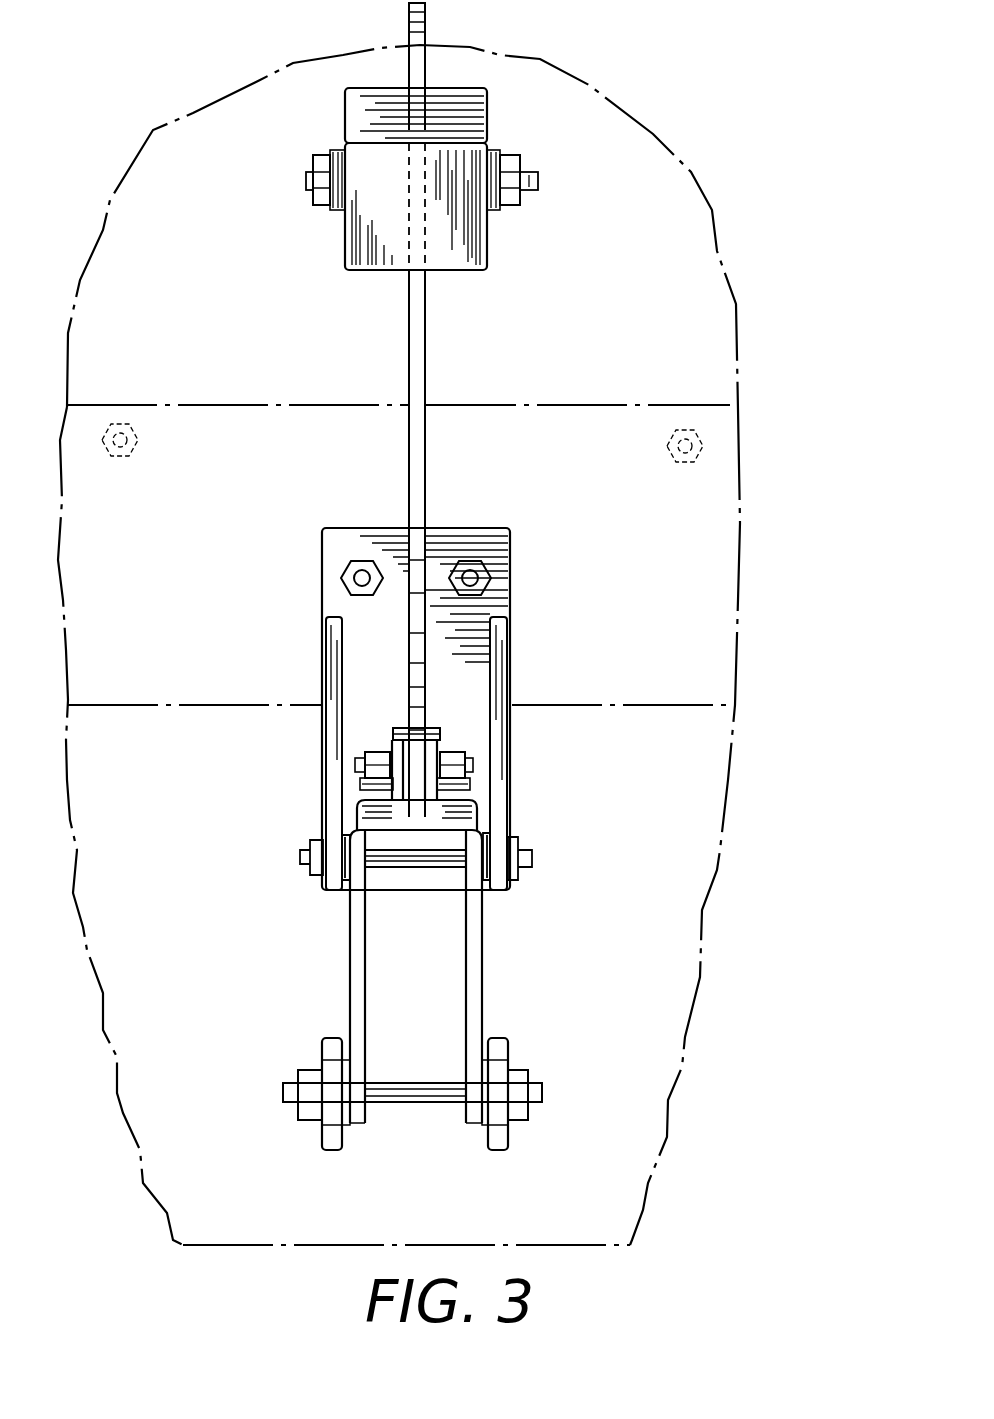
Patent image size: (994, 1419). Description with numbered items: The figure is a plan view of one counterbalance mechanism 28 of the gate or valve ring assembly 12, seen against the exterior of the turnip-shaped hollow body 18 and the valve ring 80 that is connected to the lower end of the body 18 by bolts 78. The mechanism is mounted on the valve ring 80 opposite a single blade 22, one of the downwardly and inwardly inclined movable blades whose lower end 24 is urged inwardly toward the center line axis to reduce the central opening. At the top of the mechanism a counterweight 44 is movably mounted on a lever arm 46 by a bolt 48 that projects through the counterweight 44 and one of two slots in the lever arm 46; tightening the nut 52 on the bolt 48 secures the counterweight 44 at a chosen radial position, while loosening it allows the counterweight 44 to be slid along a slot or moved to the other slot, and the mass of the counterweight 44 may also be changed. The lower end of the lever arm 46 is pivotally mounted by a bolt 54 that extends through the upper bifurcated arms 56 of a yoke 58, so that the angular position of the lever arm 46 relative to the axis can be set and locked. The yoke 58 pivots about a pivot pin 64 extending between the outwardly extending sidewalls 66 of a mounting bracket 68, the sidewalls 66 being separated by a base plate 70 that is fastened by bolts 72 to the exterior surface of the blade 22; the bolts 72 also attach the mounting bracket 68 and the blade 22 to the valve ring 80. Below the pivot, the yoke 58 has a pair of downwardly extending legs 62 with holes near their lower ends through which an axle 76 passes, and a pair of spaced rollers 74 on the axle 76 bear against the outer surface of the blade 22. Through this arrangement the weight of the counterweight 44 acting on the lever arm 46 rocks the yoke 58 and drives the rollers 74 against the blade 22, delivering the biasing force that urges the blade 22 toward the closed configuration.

The valve ring assembly 12 is at (530, 933).
The hollow body 18 is at (712, 213).
The blade 22 is at (683, 1067).
The lower end of blade 24 is at (630, 1246).
The counterbalance mechanism 28 is at (416, 677).
The counterweight 44 is at (455, 262).
The lever arm 46 is at (408, 363).
The bolt 48 is at (313, 180).
The nut 52 is at (505, 212).
The bolt 54 is at (465, 756).
The upper bifurcated arms 56 is at (440, 728).
The yoke 58 is at (395, 976).
The downwardly extending legs 62 is at (350, 930).
The pivot pin 64 is at (393, 867).
The sidewalls 66 is at (325, 655).
The mounting bracket 68 is at (340, 522).
The base plate 70 is at (335, 598).
The bolts 72 is at (348, 568).
The rollers 74 is at (333, 1150).
The axle 76 is at (415, 1103).
The bolts 78 is at (140, 440).
The valve ring 80 is at (603, 405).